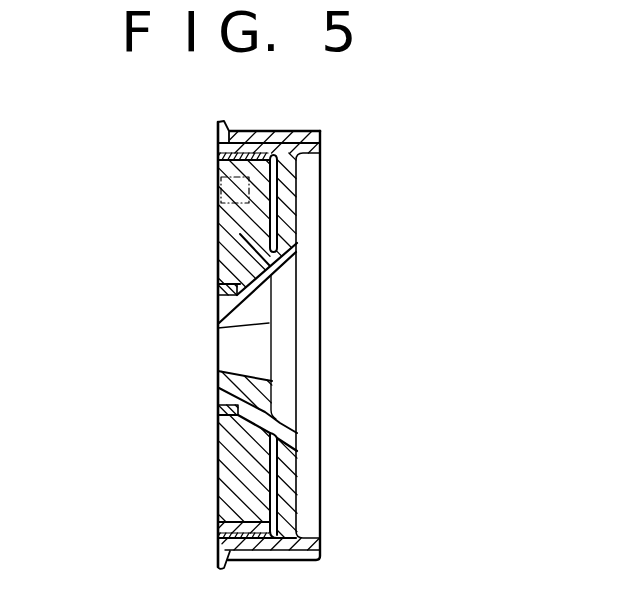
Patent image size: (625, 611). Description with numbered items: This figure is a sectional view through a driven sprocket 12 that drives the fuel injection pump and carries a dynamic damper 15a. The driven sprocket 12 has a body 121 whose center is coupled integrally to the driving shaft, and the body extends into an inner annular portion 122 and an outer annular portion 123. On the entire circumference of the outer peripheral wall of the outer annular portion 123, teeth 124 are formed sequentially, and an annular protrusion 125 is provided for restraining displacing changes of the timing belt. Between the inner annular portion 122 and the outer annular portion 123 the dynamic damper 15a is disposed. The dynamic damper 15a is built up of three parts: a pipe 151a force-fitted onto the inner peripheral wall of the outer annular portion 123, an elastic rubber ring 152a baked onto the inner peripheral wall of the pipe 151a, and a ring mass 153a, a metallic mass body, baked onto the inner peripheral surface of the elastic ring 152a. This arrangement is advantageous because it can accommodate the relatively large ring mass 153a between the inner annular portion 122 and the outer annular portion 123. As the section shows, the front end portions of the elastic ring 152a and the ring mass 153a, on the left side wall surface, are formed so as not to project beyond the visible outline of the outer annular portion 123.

The driven sprocket 12 is at (343, 335).
The body 121 is at (285, 210).
The inner annular portion 122 is at (253, 312).
The teeth 124 is at (310, 132).
The annular protrusion 125 is at (213, 130).
The outer annular portion 123 is at (218, 147).
The dynamic damper 15a is at (166, 340).
The pipe 151a is at (217, 160).
The elastic rubber ring 152a is at (216, 192).
The ring mass 153a is at (230, 260).